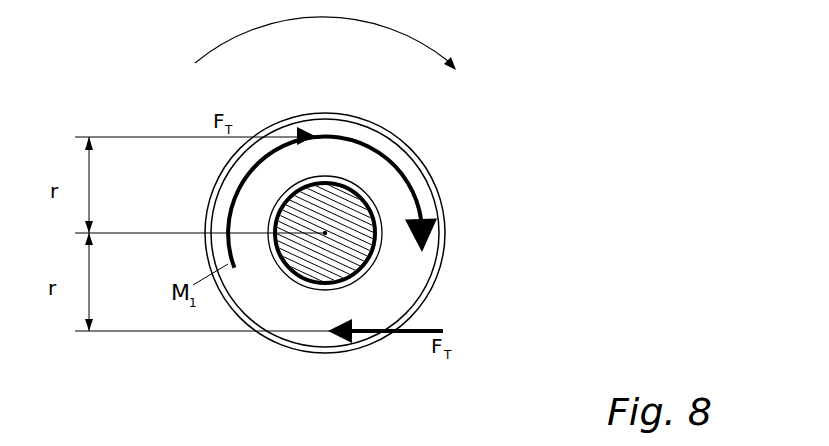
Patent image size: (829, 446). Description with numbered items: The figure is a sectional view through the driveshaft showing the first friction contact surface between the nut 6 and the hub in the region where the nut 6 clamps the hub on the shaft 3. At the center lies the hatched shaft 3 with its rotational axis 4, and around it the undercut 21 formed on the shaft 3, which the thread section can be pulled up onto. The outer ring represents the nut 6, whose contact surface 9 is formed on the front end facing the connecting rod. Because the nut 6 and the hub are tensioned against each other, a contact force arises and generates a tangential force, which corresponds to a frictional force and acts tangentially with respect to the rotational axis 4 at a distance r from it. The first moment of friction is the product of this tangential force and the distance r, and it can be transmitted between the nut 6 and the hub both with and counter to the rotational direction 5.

The shaft 3 is at (346, 242).
The rotational axis 4 is at (328, 231).
The rotational direction 5 is at (325, 43).
The nut 6 is at (440, 272).
The contact surface 9 is at (392, 292).
The undercut 21 is at (372, 247).